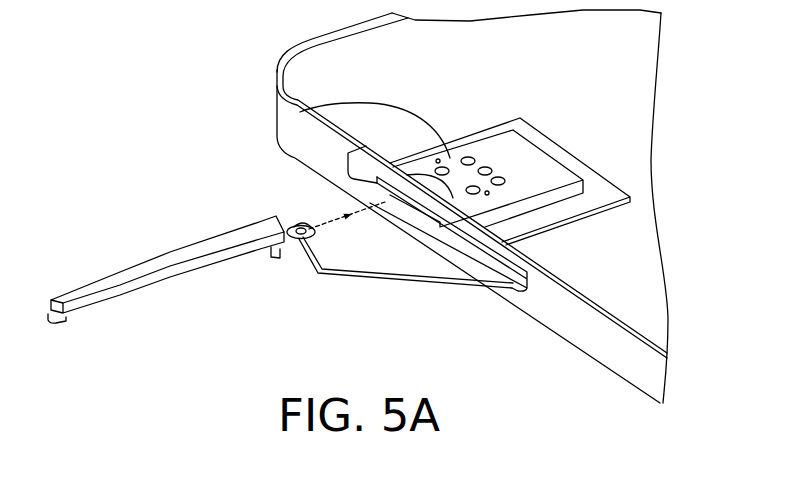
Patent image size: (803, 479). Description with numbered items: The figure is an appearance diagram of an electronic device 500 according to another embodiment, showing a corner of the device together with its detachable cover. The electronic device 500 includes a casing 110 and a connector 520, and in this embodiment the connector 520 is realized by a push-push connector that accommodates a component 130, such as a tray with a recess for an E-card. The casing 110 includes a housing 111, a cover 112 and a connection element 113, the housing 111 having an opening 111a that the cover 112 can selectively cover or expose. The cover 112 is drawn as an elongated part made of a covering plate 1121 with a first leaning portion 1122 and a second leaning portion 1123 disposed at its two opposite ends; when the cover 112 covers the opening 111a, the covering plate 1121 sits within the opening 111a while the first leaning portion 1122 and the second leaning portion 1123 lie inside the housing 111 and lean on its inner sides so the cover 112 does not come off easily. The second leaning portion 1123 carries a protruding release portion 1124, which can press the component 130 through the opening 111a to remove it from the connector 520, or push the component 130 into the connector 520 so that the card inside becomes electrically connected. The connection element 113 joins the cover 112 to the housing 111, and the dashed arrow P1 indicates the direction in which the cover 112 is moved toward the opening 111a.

The electronic device 500 is at (254, 40).
The connector 520 is at (583, 8).
The component 130 is at (347, 176).
The casing 110 is at (291, 271).
The housing 111 is at (459, 250).
The opening 111a is at (462, 238).
The cover 112 is at (175, 253).
The covering plate 1121 is at (165, 260).
The first leaning portion 1122 is at (46, 315).
The second leaning portion 1123 is at (287, 228).
The release portion 1124 is at (303, 226).
The connection element 113 is at (319, 283).
The insertion direction P1 is at (347, 224).